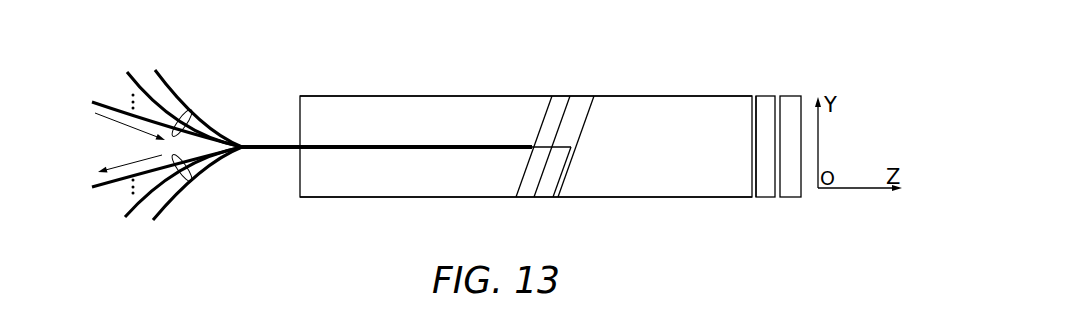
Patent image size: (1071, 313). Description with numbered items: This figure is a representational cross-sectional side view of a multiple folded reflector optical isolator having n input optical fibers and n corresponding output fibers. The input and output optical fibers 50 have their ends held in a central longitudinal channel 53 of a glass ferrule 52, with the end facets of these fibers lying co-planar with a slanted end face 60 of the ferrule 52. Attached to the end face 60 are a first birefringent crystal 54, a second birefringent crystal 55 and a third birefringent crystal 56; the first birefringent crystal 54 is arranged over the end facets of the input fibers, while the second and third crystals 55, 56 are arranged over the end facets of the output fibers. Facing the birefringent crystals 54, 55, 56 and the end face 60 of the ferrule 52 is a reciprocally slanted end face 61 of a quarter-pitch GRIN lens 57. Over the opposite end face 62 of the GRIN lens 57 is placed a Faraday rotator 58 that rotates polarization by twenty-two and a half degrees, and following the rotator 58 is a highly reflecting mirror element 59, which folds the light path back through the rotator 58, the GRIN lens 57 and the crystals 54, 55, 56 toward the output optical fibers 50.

The input and output optical fibers 50 is at (186, 145).
The glass ferrule 52 is at (526, 83).
The central longitudinal channel 53 is at (526, 191).
The first birefringent crystal 54 is at (577, 115).
The second birefringent crystal 55 is at (563, 193).
The third birefringent crystal 56 is at (516, 166).
The quarter-pitch GRIN lens 57 is at (526, 131).
The Faraday rotator 58 is at (750, 119).
The highly reflecting mirror element 59 is at (817, 166).
The slanted end face 60 is at (431, 77).
The reciprocally slanted end face 61 is at (591, 128).
The opposite end face 62 is at (735, 171).